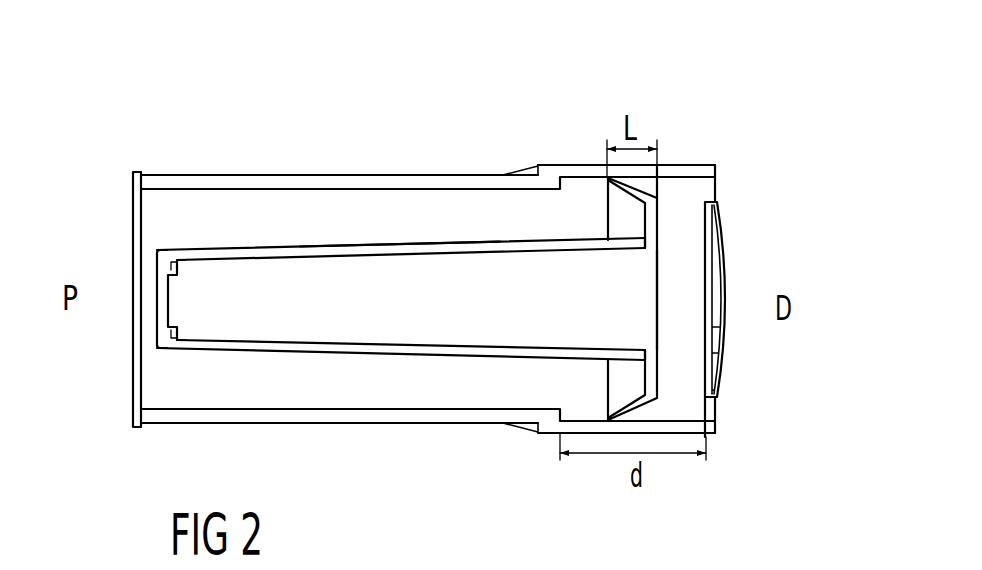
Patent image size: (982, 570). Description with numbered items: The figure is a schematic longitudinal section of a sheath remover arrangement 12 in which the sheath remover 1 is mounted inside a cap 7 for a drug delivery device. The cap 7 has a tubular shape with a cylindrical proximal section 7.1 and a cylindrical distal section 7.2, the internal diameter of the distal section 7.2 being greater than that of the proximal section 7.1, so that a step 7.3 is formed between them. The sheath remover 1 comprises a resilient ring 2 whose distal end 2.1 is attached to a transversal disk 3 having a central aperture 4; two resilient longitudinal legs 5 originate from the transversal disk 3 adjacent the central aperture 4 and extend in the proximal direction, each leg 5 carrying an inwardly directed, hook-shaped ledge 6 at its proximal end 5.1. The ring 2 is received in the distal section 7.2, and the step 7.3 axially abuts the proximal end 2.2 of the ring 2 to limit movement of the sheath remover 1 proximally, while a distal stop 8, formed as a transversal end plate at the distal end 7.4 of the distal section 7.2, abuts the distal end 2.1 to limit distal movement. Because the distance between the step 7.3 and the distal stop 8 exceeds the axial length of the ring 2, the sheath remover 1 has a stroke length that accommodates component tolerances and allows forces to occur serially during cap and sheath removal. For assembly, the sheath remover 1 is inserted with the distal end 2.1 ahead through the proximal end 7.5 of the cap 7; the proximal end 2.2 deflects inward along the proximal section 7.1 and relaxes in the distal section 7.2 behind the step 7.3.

The sheath remover 1 is at (373, 233).
The ring 2 is at (722, 428).
The distal end of the ring 2.1 is at (657, 198).
The proximal end of the ring 2.2 is at (562, 433).
The transversal disk 3 is at (720, 358).
The central aperture 4 is at (657, 293).
The resilient longitudinal legs 5 is at (337, 258).
The proximal end of the leg 5.1 is at (167, 250).
The inwardly directed ledge 6 is at (165, 263).
The cap 7 is at (323, 166).
The proximal section 7.1 is at (243, 175).
The distal section 7.2 is at (597, 165).
The step 7.3 is at (547, 166).
The distal end of the distal section 7.4 is at (715, 166).
The proximal end of the cap 7.5 is at (132, 175).
The distal stop 8 is at (723, 233).
The sheath remover arrangement 12 is at (697, 113).